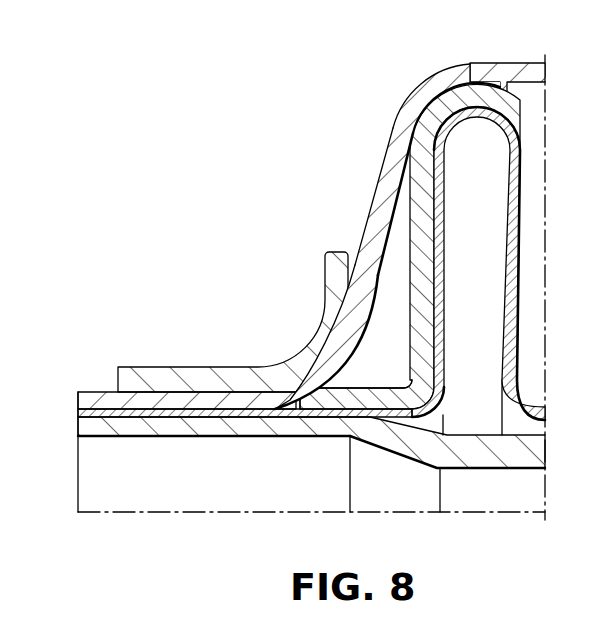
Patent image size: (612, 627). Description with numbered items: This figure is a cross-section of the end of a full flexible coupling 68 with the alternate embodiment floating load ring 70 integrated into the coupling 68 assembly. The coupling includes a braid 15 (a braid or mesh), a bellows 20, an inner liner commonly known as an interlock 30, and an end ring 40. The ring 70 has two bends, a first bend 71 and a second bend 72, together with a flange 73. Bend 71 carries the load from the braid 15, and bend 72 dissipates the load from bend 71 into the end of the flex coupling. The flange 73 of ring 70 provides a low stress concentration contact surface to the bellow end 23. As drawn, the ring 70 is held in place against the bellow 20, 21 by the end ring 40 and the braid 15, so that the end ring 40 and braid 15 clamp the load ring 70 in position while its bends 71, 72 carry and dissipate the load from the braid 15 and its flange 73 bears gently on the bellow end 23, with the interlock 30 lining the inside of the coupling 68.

The braid 15 is at (95, 398).
The bellows 20 is at (410, 220).
The bellow 21 is at (441, 283).
The bellow end 23 is at (295, 413).
The interlock 30 is at (82, 427).
The end ring 40 is at (178, 375).
The flexible coupling 68 is at (311, 257).
The floating load ring 70 is at (379, 235).
The bend 71 is at (437, 98).
The bend 72 is at (411, 390).
The flange 73 is at (293, 380).